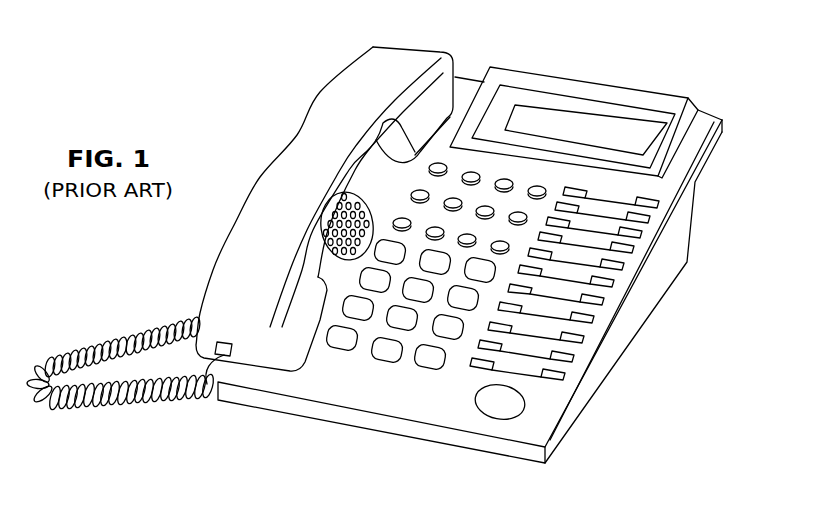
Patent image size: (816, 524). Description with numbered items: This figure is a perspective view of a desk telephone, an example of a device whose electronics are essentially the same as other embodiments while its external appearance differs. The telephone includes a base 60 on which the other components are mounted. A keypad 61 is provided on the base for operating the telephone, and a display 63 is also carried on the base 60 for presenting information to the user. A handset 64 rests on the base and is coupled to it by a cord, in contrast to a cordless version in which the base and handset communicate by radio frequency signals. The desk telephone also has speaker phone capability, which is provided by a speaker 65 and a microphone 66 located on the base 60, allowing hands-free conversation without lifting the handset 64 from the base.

The base 60 is at (462, 78).
The keypad 61 is at (380, 374).
The display 63 is at (588, 128).
The handset 64 is at (303, 145).
The speaker 65 is at (360, 213).
The microphone 66 is at (490, 408).